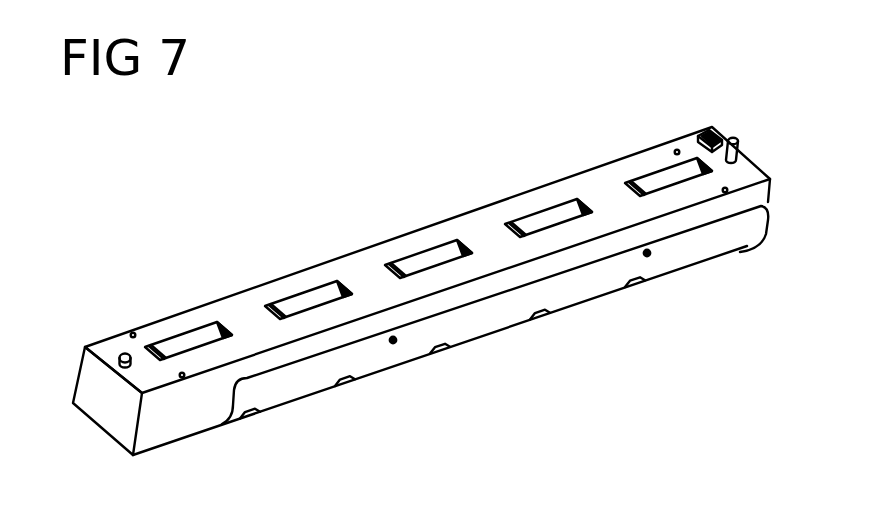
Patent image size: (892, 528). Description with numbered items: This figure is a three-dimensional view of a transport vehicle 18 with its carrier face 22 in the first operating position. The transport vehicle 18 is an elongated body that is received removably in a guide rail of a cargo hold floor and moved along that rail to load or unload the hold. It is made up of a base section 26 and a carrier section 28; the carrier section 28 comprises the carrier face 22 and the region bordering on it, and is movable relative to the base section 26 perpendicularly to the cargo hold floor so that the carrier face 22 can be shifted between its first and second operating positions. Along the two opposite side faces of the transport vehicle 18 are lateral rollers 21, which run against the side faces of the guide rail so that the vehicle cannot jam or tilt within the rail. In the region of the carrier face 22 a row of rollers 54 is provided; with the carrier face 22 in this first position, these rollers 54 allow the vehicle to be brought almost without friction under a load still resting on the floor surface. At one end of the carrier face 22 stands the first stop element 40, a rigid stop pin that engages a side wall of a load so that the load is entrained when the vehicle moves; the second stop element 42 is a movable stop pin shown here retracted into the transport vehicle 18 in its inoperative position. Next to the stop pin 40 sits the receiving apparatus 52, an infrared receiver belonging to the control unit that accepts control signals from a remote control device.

The transport vehicle 18 is at (421, 241).
The lateral rollers 21 is at (398, 348).
The carrier face 22 is at (358, 263).
The base section 26 is at (312, 400).
The carrier section 28 is at (181, 398).
The first stop element 40 is at (731, 137).
The second stop element 42 is at (125, 353).
The receiving apparatus 52 is at (705, 132).
The rollers 54 is at (210, 330).